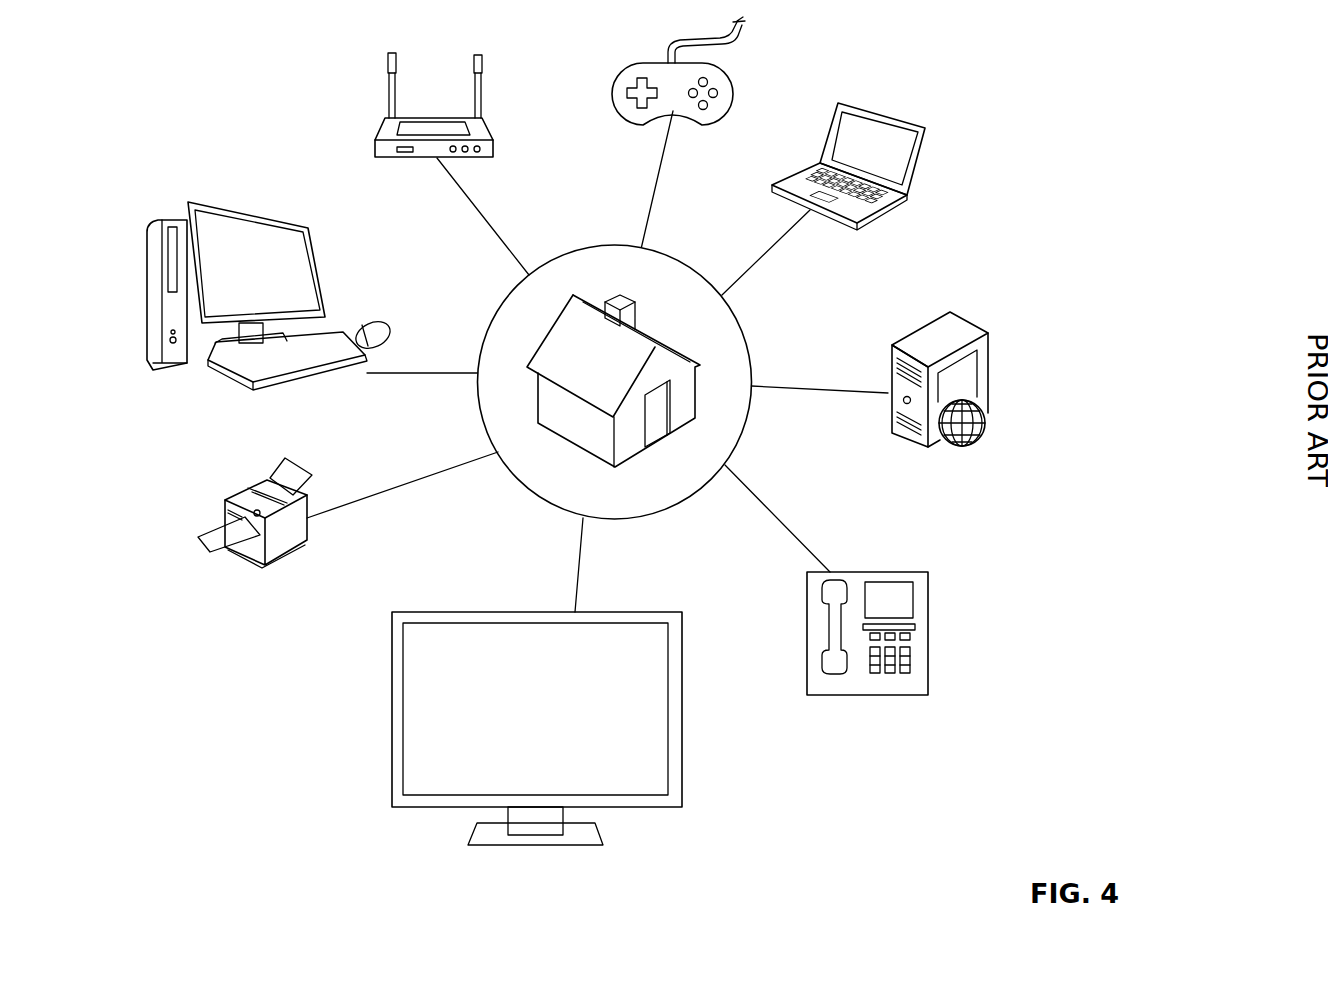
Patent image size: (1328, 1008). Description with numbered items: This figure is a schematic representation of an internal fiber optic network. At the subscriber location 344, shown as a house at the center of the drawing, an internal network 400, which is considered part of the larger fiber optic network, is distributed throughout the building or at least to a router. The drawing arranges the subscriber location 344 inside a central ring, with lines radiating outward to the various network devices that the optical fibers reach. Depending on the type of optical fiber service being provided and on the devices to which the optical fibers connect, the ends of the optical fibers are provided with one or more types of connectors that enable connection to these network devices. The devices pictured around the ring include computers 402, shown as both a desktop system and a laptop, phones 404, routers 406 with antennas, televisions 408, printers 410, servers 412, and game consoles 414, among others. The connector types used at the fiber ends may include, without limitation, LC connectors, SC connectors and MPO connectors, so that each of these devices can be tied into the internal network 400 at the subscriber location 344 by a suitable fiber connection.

The internal network 400 is at (165, 95).
The subscriber location 344 is at (655, 335).
The computers 402 is at (202, 203).
The phones 404 is at (860, 570).
The routers 406 is at (385, 127).
The televisions 408 is at (463, 612).
The printers 410 is at (242, 490).
The servers 412 is at (970, 318).
The game consoles 414 is at (642, 60).